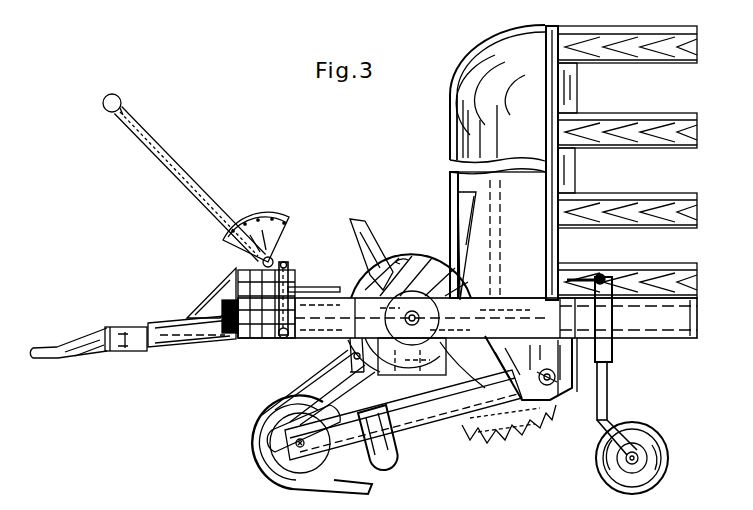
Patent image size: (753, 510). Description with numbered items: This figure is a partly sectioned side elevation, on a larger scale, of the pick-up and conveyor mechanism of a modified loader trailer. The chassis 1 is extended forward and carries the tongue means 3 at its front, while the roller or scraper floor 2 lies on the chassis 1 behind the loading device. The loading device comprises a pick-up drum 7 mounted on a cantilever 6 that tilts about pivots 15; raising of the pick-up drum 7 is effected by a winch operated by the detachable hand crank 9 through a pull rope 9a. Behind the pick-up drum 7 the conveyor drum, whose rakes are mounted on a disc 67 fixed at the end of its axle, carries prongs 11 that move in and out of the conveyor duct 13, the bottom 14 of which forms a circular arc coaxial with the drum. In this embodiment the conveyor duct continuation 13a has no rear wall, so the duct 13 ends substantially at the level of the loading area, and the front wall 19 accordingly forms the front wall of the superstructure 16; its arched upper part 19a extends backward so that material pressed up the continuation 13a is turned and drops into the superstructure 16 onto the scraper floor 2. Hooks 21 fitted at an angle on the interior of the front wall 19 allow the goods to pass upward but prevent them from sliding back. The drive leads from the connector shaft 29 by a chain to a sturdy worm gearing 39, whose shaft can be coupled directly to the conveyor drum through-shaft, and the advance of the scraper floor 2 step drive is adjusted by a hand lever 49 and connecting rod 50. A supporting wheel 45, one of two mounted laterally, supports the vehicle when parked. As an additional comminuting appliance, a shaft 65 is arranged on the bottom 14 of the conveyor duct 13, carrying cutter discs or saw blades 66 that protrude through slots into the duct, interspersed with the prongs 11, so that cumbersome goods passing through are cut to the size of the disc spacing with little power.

The chassis 1 is at (679, 334).
The scraper floor 2 is at (647, 343).
The tongue means 3 is at (130, 342).
The cantilever 6 is at (345, 450).
The pick-up drum 7 is at (252, 437).
The detachable hand crank 9 is at (273, 338).
The pull rope 9a is at (322, 322).
The prongs 11 is at (372, 245).
The conveyor duct 13 is at (441, 432).
The conveyor duct continuation 13a is at (468, 117).
The bottom of conveyor duct 14 is at (420, 440).
The pivots 15 is at (552, 392).
The superstructure 16 is at (644, 36).
The front wall 19 is at (452, 150).
The arched upper part of front wall 19a is at (472, 66).
The hooks 21 is at (460, 195).
The connector shaft 29 is at (207, 297).
The worm gearing 39 is at (347, 340).
The supporting wheel 45 is at (605, 477).
The hand lever 49 is at (192, 182).
The connecting rod 50 is at (323, 287).
The shaft 65 is at (478, 442).
The cutter discs or saw blades 66 is at (517, 433).
The disc 67 is at (422, 260).